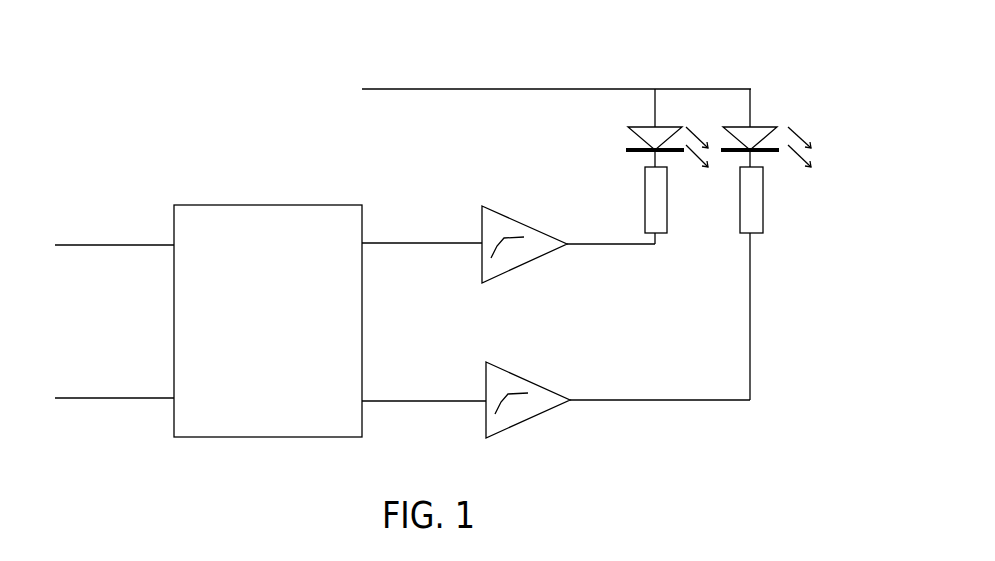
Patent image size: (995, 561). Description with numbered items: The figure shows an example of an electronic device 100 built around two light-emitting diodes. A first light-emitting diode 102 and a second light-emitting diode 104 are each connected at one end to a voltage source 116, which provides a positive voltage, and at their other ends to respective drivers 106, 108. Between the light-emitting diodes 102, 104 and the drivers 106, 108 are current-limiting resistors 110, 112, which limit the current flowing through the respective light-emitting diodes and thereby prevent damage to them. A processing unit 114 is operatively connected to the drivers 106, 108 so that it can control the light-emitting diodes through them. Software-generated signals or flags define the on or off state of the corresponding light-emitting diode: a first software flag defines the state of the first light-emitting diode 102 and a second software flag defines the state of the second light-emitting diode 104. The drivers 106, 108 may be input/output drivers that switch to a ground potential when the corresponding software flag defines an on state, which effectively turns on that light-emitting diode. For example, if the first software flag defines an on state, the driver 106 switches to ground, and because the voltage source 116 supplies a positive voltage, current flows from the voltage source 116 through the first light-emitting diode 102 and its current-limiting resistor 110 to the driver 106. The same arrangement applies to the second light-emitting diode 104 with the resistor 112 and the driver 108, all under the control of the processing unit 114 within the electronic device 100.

The electronic device 100 is at (248, 63).
The light-emitting diode (LED1) 102 is at (643, 130).
The light-emitting diode (LED2) 104 is at (745, 128).
The driver 106 is at (543, 255).
The driver 108 is at (540, 413).
The current-limiting resistor 110 is at (665, 220).
The current-limiting resistor 112 is at (760, 220).
The processing unit 114 is at (270, 206).
The voltage source 116 is at (455, 87).